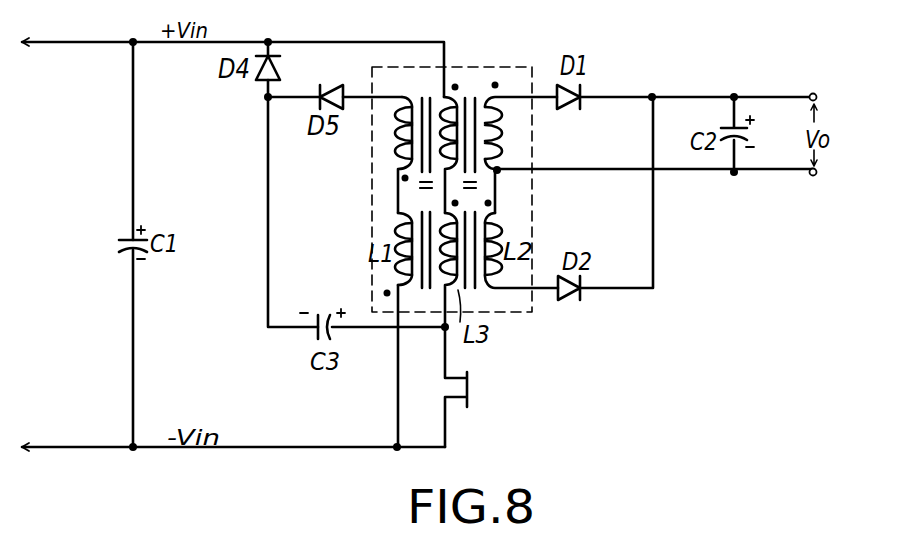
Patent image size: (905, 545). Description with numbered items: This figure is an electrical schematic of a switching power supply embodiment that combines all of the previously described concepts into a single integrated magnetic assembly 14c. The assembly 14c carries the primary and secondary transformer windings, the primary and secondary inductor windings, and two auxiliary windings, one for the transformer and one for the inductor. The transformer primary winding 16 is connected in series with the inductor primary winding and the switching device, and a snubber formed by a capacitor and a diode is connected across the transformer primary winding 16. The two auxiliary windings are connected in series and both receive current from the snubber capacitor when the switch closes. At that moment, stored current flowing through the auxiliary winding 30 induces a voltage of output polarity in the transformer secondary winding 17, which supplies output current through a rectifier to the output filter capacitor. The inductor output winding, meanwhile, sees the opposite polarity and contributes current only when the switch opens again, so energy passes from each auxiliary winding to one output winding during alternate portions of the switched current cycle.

The integrated magnetic assembly 14c is at (531, 311).
The transformer primary winding 16 is at (457, 102).
The transformer secondary winding 17 is at (507, 133).
The auxiliary winding 30 is at (400, 132).